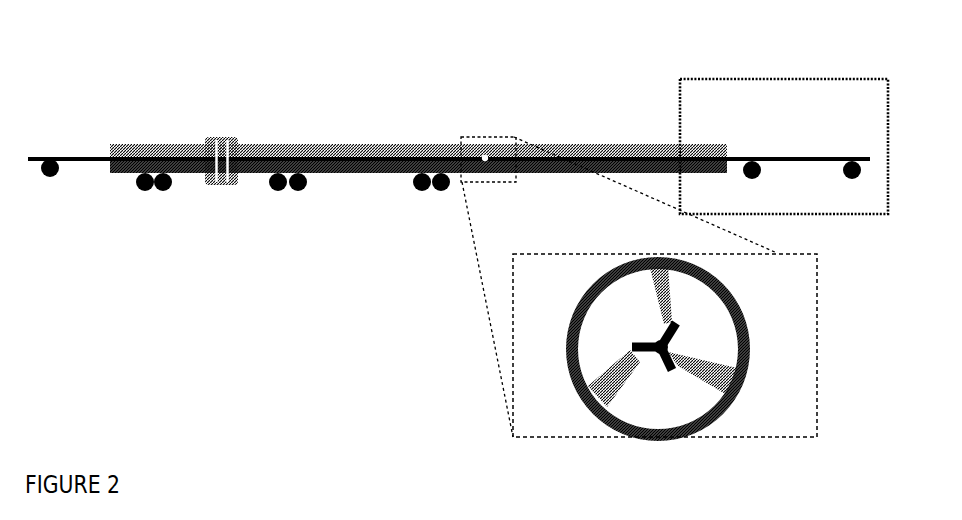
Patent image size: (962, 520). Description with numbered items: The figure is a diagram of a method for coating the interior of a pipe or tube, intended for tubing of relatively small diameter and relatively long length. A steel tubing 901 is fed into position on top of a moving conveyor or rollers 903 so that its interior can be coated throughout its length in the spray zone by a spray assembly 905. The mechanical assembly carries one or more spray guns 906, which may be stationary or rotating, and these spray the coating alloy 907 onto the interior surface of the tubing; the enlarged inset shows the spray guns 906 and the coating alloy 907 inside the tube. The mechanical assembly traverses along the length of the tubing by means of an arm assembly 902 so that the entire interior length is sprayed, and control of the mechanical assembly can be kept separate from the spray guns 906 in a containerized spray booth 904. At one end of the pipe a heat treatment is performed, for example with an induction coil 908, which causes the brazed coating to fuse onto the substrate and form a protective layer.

The steel tubing 901 is at (338, 143).
The arm assembly 902 is at (410, 150).
The rollers 903 is at (287, 192).
The containerized spray booth 904 is at (732, 84).
The spray assembly 905 is at (483, 130).
The spray guns 906 is at (685, 332).
The coating alloy 907 is at (600, 377).
The induction coil 908 is at (228, 137).